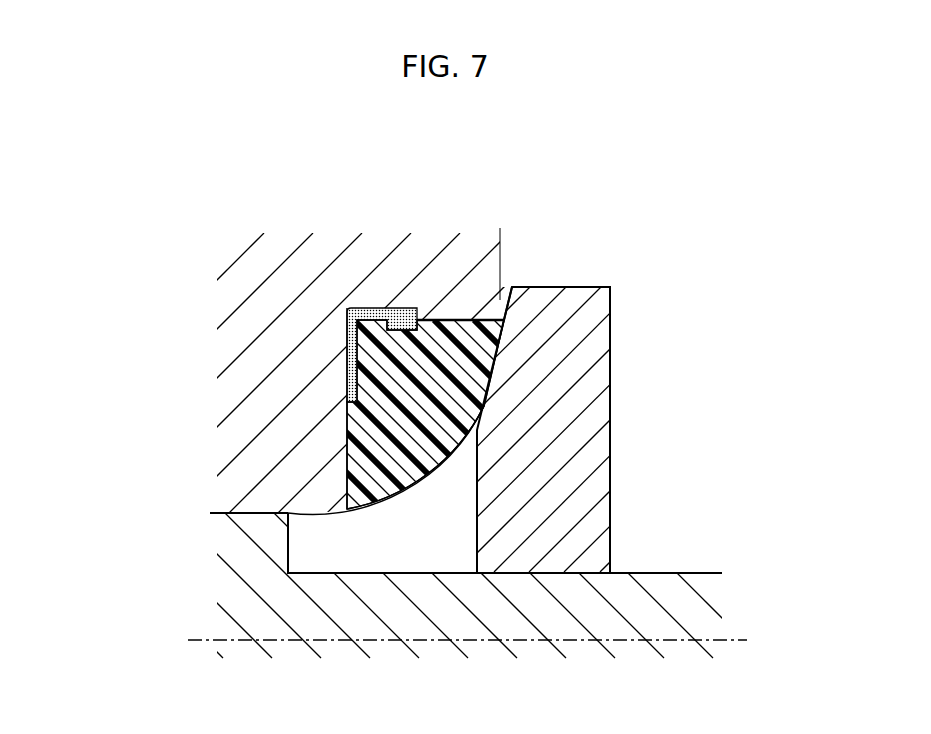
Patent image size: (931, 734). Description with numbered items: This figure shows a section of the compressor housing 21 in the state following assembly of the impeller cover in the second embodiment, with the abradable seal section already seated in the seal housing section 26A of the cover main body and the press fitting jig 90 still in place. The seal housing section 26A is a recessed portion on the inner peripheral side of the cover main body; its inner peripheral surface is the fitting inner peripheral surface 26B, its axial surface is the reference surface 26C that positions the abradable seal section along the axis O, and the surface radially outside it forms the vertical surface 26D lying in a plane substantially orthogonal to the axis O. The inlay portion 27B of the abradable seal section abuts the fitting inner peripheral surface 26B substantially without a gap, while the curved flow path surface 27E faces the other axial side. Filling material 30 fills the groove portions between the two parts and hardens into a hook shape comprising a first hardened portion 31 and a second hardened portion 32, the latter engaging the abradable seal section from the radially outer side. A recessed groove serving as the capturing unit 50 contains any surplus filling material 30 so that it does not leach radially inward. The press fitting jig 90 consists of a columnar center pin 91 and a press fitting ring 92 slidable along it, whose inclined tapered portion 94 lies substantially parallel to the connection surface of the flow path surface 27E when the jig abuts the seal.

The compressor housing 21 is at (377, 324).
The seal housing section 26A is at (467, 232).
The fitting inner peripheral surface 26B is at (480, 343).
The reference surface 26C is at (350, 445).
The vertical surface 26D is at (502, 253).
The inlay portion 27B is at (455, 318).
The flow path surface 27E is at (421, 481).
The filling material 30 is at (381, 268).
The first hardened portion 31 is at (367, 355).
The second hardened portion 32 is at (402, 319).
The capturing unit 50 is at (393, 422).
The press fitting jig 90 is at (481, 451).
The center pin 91 is at (647, 585).
The press fitting ring 92 is at (547, 408).
The tapered portion 94 is at (500, 297).
The axis O is at (742, 638).